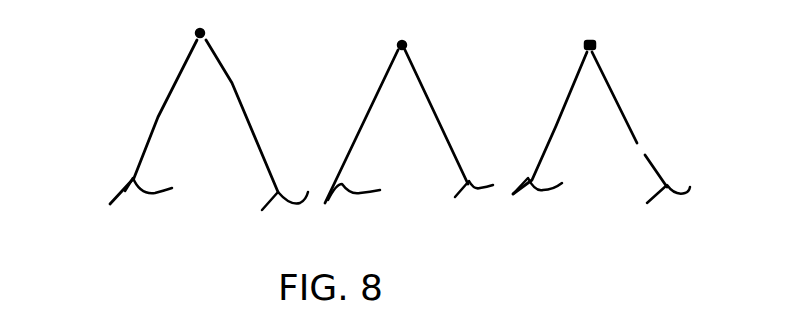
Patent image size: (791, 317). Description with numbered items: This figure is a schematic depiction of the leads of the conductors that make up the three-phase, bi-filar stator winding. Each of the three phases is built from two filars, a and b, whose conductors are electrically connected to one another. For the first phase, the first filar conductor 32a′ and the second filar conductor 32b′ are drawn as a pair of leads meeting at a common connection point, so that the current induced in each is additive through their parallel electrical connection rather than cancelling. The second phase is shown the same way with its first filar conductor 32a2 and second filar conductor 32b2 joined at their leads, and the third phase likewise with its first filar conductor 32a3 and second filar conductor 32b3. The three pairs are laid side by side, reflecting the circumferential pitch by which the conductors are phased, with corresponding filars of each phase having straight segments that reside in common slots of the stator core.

The first filar conductor of the first phase 32a′ is at (158, 115).
The second filar conductor of the first phase 32b′ is at (317, 50).
The first filar conductor of the second phase 32a2 is at (367, 118).
The second filar conductor of the second phase 32b2 is at (427, 96).
The first filar conductor of the third phase 32a3 is at (554, 126).
The second filar conductor of the third phase 32b3 is at (624, 108).